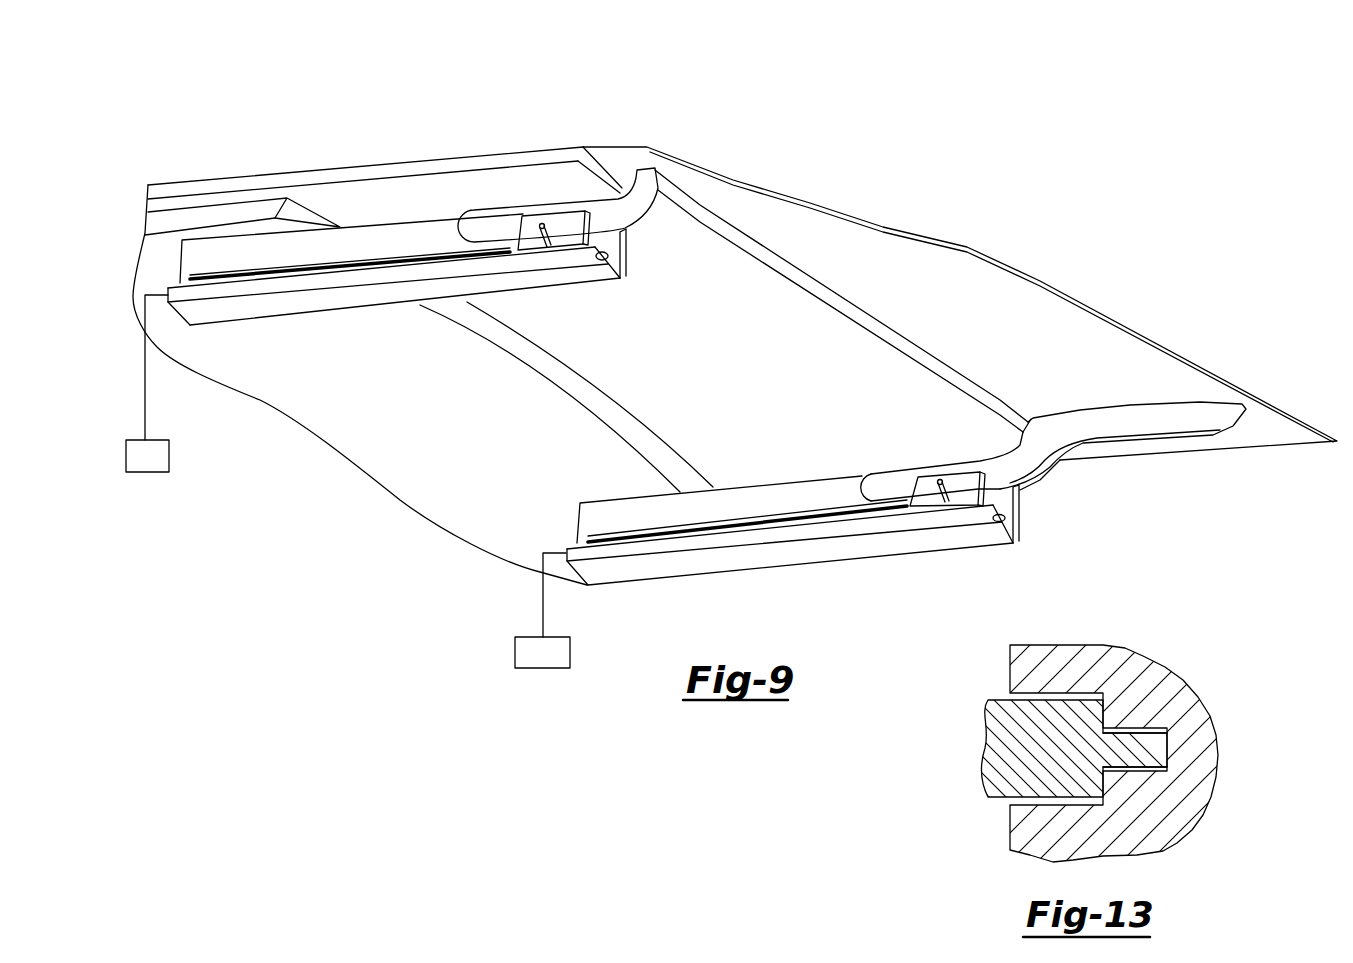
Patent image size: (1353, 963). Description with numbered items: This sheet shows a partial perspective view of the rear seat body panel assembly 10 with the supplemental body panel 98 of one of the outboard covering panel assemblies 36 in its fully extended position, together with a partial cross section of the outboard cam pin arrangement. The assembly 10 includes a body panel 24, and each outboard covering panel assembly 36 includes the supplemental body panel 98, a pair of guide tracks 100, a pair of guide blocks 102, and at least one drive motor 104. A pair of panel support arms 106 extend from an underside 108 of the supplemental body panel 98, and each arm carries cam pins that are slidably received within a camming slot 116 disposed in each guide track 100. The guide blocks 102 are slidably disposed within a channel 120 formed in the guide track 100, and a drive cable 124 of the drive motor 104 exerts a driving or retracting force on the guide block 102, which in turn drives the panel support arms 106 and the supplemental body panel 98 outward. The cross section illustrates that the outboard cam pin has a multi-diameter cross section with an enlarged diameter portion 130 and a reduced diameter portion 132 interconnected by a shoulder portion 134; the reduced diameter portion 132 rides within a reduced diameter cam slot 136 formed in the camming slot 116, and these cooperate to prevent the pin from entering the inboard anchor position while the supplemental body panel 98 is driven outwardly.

In FIG. 9, the rear seat body panel assembly 10 is at (1062, 186).
In FIG. 9, the body panel 24 is at (326, 167).
In FIG. 9, the outboard covering panel assembly 36 is at (903, 580).
In FIG. 9, the supplemental body panel 98 is at (1077, 323).
In FIG. 9, the guide track 100 is at (378, 307).
In FIG. 9, the guide block 102 is at (568, 228).
In FIG. 9, the drive motor 104 is at (154, 473).
In FIG. 9, the panel support arm 106 is at (641, 199).
In FIG. 9, the underside 108 is at (967, 331).
In FIG. 9, the channel 120 is at (608, 264).
In FIG. 9, the drive cable 124 is at (146, 410).
In FIG. 13, the camming slot 116 is at (1060, 692).
In FIG. 13, the enlarged diameter portion 130 is at (992, 699).
In FIG. 13, the reduced diameter portion 132 is at (1137, 727).
In FIG. 13, the shoulder portion 134 is at (1105, 792).
In FIG. 13, the reduced diameter cam slot 136 is at (1150, 769).